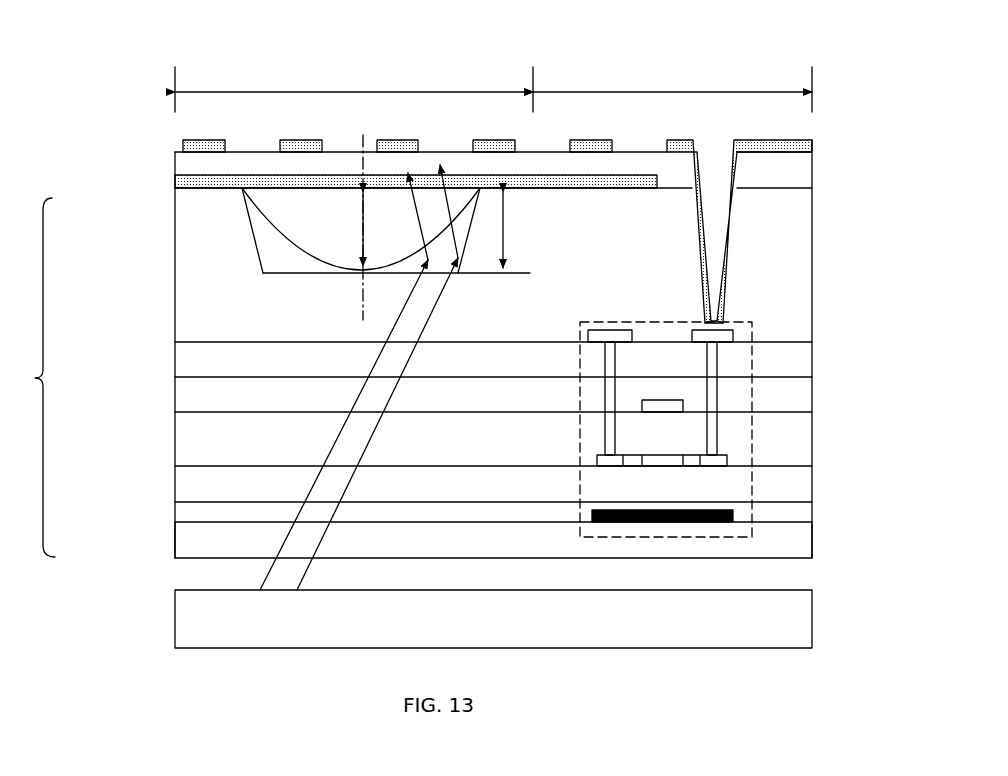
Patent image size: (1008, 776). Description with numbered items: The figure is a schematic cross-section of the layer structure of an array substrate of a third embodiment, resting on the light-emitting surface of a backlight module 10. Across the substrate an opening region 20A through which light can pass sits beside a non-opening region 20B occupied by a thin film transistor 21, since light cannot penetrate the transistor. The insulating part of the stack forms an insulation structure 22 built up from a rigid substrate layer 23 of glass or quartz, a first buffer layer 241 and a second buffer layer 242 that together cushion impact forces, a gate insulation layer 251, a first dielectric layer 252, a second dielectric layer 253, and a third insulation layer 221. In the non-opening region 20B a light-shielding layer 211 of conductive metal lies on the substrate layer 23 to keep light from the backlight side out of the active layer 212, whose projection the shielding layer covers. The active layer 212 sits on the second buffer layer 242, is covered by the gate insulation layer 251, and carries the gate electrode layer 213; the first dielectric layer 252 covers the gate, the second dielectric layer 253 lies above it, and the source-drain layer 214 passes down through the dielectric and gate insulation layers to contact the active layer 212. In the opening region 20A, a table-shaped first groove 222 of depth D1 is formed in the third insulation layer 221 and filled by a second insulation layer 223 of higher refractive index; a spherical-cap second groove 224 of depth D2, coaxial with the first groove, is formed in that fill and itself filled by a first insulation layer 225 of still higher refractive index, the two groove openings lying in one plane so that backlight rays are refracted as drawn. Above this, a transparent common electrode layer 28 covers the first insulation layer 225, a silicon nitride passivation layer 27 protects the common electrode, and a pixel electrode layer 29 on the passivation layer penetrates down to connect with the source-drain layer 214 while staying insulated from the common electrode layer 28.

The backlight module 10 is at (812, 617).
The opening region 20A is at (354, 86).
The non-opening region 20B is at (672, 86).
The thin film transistor 21 is at (742, 423).
The light-shielding layer 211 is at (665, 510).
The active layer 212 is at (727, 460).
The gate electrode layer 213 is at (660, 400).
The source-drain layer 214 is at (733, 334).
The insulation structure 22 is at (31, 377).
The third insulation layer 221 is at (175, 275).
The first groove 222 is at (295, 275).
The second insulation layer 223 is at (267, 244).
The second groove 224 is at (287, 258).
The first insulation layer 225 is at (275, 213).
The substrate layer 23 is at (175, 548).
The first buffer layer 241 is at (175, 512).
The second buffer layer 242 is at (175, 485).
The gate insulation layer 251 is at (175, 444).
The first dielectric layer 252 is at (175, 400).
The second dielectric layer 253 is at (175, 365).
The passivation layer 27 is at (175, 165).
The common electrode layer 28 is at (175, 185).
The pixel electrode layer 29 is at (812, 145).
The depth of the first groove D1 is at (521, 230).
The depth of the second groove D2 is at (351, 229).